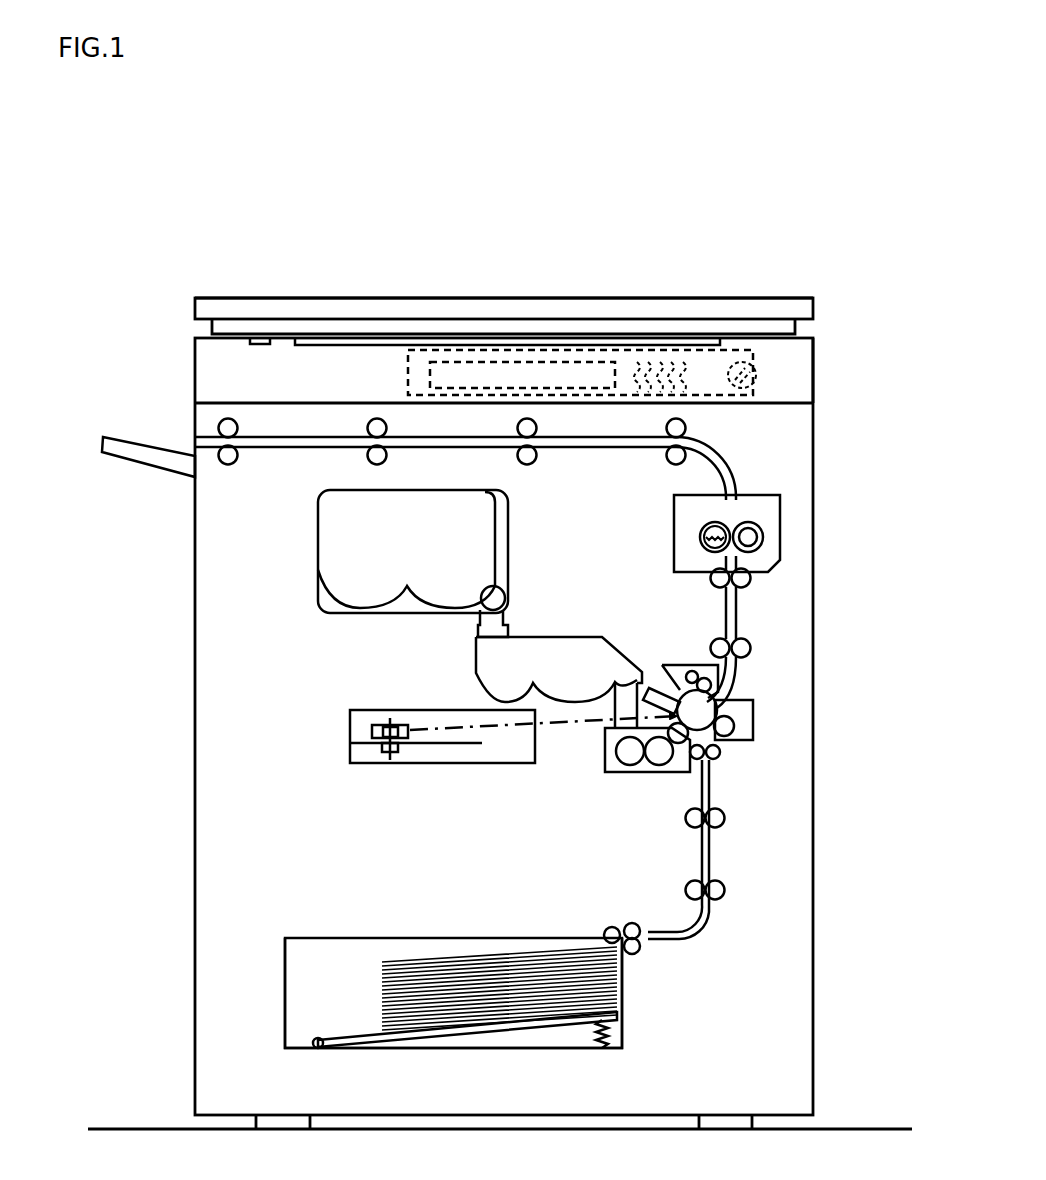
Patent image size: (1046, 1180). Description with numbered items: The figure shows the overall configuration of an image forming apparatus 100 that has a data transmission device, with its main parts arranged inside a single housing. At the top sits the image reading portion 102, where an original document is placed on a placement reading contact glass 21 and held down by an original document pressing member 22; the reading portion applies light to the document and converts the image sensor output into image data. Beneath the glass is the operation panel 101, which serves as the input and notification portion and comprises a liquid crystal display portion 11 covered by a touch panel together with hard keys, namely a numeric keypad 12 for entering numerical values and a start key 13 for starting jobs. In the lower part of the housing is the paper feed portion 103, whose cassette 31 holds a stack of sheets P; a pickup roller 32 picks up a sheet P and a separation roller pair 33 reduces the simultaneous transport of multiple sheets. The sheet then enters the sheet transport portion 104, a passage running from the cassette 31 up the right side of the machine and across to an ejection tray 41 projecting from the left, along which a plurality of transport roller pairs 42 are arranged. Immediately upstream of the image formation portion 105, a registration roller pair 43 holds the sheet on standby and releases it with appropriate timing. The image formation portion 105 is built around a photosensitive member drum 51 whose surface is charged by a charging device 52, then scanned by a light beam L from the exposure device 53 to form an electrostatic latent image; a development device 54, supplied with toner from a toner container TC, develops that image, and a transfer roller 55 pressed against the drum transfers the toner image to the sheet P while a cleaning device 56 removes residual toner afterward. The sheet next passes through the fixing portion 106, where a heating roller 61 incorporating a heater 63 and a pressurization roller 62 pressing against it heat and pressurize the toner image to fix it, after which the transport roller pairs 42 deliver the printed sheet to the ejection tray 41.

The image forming apparatus 100 is at (193, 296).
The original document pressing member 22 is at (534, 308).
The placement reading contact glass 21 is at (636, 342).
The image reading portion 102 is at (815, 388).
The operation panel 101 is at (406, 368).
The liquid crystal display portion 11 is at (478, 385).
The numeric keypad 12 is at (683, 386).
The start key 13 is at (742, 390).
The sheet transport portion 104 is at (605, 450).
The ejection tray 41 is at (150, 450).
The transport roller pairs 42 is at (228, 465).
The fixing portion 106 is at (784, 528).
The heater 63 is at (710, 524).
The heating roller 61 is at (702, 537).
The pressurization roller 62 is at (749, 521).
The toner container TC is at (330, 548).
The development device 54 is at (604, 760).
The exposure device 53 is at (350, 735).
The light beam L is at (443, 725).
The photosensitive member drum 51 is at (662, 690).
The charging device 52 is at (648, 688).
The cleaning device 56 is at (683, 667).
The image formation portion 105 is at (757, 725).
The transfer roller 55 is at (745, 716).
The registration roller pair 43 is at (722, 752).
The paper feed portion 103 is at (376, 938).
The cassette 31 is at (310, 935).
The sheet P is at (385, 962).
The pickup roller 32 is at (607, 927).
The separation roller pair 33 is at (636, 954).